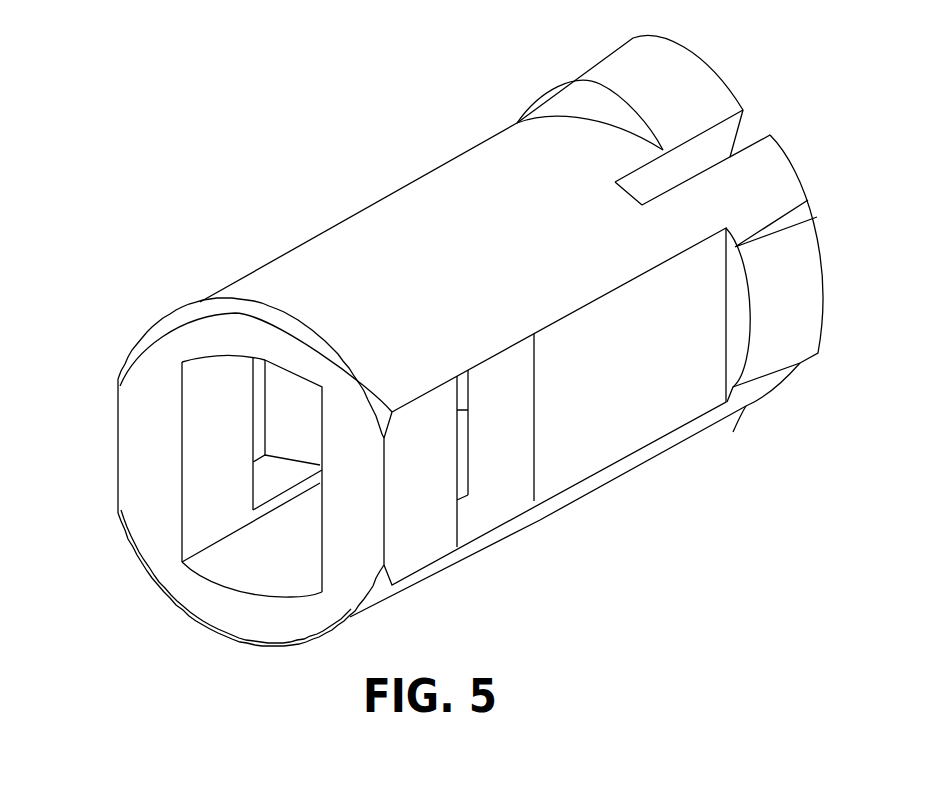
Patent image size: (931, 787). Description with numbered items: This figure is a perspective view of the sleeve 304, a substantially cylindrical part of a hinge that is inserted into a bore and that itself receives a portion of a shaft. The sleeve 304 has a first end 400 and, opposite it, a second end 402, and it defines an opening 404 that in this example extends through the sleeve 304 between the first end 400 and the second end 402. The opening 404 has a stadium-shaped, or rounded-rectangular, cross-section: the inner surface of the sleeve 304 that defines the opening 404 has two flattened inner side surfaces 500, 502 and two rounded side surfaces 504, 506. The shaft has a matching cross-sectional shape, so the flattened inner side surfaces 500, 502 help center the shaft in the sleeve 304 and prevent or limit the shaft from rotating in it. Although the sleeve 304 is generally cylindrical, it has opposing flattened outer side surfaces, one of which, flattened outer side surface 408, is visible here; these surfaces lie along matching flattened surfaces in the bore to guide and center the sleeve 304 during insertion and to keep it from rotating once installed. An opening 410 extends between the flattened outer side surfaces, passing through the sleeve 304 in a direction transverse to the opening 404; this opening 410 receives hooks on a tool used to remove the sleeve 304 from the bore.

The sleeve 304 is at (243, 140).
The first end 400 is at (741, 99).
The second end 402 is at (213, 343).
The opening 404 is at (203, 428).
The flattened outer side surface 408 is at (573, 412).
The opening 410 is at (490, 485).
The flattened inner side surface 500 is at (200, 478).
The flattened inner side surface 502 is at (322, 533).
The rounded side surface 504 is at (265, 358).
The rounded side surface 506 is at (217, 585).